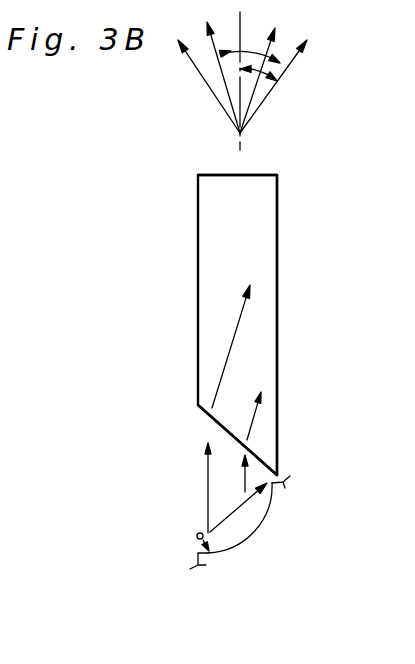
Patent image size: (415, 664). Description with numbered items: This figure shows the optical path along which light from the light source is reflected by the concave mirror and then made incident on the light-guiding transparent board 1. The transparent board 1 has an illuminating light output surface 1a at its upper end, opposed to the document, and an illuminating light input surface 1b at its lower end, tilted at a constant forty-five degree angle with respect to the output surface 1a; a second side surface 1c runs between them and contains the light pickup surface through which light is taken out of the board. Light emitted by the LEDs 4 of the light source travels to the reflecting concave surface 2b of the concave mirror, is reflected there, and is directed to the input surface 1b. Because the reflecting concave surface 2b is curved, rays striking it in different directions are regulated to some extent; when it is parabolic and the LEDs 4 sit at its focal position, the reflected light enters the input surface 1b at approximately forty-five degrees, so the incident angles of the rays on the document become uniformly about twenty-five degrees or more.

The light-guiding transparent board 1 is at (186, 243).
The illuminating light output surface 1a is at (252, 175).
The illuminating light input surface 1b is at (219, 424).
The second side surface 1c is at (277, 343).
The reflecting concave surface 2b is at (241, 536).
The LEDs 4 is at (196, 534).